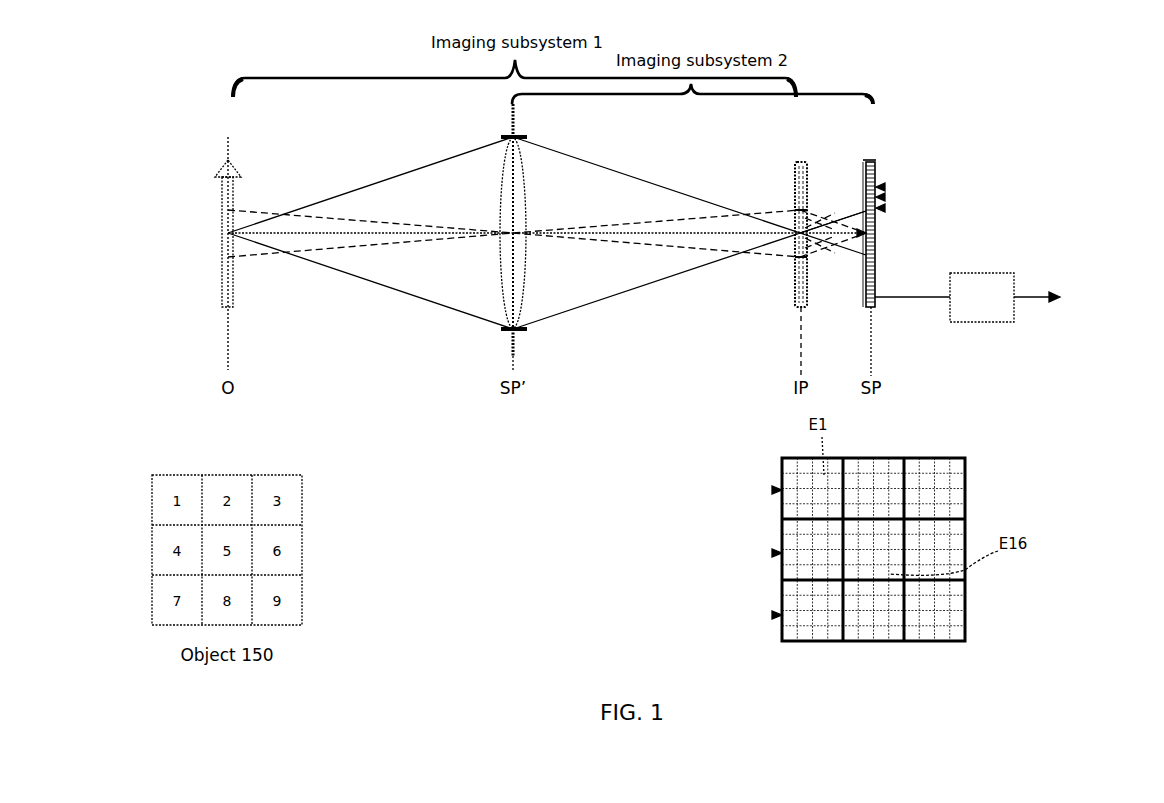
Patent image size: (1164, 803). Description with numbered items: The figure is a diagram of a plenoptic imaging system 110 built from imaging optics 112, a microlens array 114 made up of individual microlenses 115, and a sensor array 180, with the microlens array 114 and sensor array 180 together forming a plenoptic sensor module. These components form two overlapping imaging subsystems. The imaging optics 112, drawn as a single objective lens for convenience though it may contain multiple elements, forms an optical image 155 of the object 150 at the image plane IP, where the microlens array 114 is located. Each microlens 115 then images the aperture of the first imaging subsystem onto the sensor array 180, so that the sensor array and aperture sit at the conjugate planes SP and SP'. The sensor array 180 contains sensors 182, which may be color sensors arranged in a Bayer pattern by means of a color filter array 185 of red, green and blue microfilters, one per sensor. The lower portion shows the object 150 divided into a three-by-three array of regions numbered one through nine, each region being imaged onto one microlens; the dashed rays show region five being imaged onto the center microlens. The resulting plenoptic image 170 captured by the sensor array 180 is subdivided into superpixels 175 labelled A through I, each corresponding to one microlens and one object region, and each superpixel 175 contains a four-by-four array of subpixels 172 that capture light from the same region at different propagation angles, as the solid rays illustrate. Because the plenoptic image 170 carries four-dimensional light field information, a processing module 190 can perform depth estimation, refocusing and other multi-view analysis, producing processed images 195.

The plenoptic imaging system 110 is at (919, 139).
The imaging optics 112 is at (499, 153).
The microlens array 114 is at (788, 159).
The microlens 115 is at (793, 200).
The object 150 is at (240, 186).
The optical image 155 is at (794, 298).
The plenoptic image 170 is at (849, 210).
The subpixel 172 is at (955, 470).
The superpixel 175 is at (774, 615).
The sensor array 180 is at (877, 327).
The sensors 182 is at (885, 208).
The color filter array 185 is at (868, 156).
The processing module 190 is at (944, 297).
The processed images 195 is at (1087, 297).